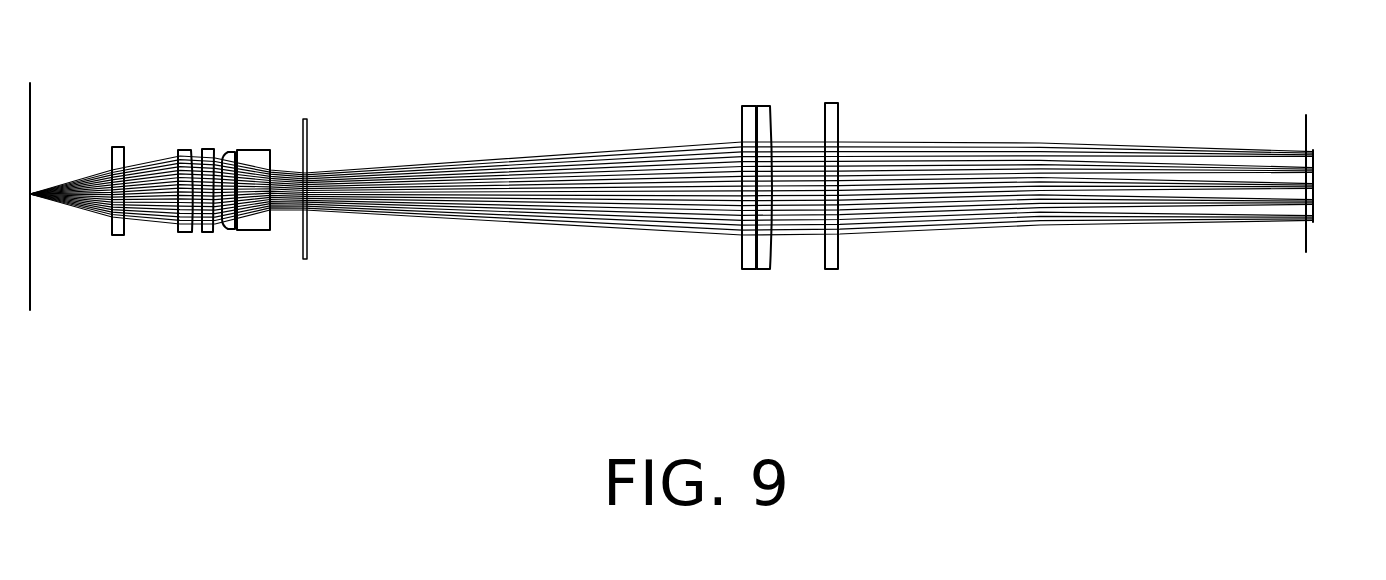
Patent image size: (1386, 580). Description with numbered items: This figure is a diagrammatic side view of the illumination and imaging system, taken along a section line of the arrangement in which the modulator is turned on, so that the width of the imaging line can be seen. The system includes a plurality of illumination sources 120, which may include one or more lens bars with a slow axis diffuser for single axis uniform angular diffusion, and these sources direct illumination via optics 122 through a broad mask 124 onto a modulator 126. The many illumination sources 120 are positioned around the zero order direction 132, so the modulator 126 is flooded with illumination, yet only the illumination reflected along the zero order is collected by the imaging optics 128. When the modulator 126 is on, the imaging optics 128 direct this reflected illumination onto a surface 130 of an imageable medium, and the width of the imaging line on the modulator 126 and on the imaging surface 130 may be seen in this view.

The surface of an imageable medium 130 is at (32, 263).
The imaging optics 128 is at (273, 150).
The illumination sources 120 is at (302, 137).
The zero order direction 132 is at (312, 184).
The optics 122 is at (850, 97).
The broad mask 124 is at (1300, 160).
The modulator 126 is at (1318, 152).